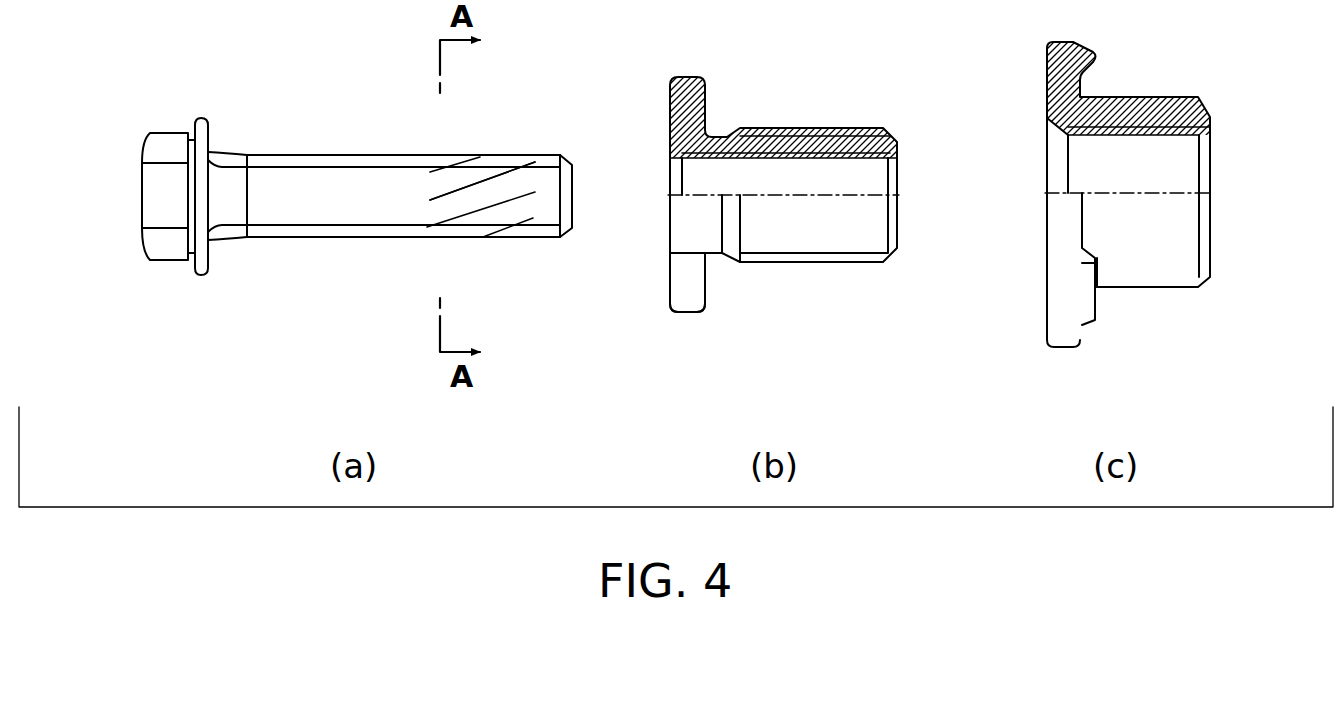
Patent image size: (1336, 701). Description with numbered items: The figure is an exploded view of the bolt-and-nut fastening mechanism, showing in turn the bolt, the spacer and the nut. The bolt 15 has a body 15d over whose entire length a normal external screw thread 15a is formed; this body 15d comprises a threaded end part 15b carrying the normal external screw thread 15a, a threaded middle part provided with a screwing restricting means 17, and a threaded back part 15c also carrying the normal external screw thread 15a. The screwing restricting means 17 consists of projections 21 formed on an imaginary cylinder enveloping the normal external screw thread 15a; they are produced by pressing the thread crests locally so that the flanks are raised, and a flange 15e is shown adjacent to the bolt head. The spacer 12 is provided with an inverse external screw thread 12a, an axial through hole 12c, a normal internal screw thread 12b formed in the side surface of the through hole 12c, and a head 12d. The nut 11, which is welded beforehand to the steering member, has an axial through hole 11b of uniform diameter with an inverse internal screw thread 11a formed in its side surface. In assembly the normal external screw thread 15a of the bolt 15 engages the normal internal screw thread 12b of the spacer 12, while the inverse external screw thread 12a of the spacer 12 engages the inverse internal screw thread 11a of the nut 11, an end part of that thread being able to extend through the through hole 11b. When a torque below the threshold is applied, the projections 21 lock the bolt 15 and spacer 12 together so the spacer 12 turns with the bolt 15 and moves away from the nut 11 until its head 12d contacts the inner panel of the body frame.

The nut 11 is at (1053, 228).
The inverse internal screw thread 11a is at (1150, 137).
The through hole 11b is at (1118, 167).
The spacer 12 is at (685, 235).
The inverse external screw thread 12a is at (777, 127).
The normal internal screw thread 12b is at (856, 163).
The through hole 12c is at (810, 178).
The head 12d is at (675, 278).
The bolt 15 is at (150, 201).
The normal external screw thread 15a is at (312, 156).
The threaded end part 15b is at (542, 203).
The threaded back part 15c is at (345, 195).
The body 15d is at (275, 195).
The flange of bolt head 15e is at (212, 122).
The screwing restricting means 17 is at (493, 195).
The projections 21 is at (447, 195).